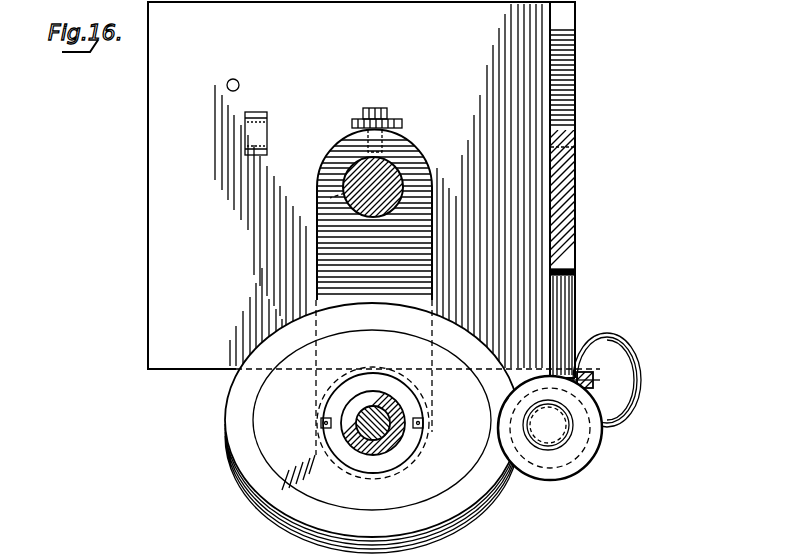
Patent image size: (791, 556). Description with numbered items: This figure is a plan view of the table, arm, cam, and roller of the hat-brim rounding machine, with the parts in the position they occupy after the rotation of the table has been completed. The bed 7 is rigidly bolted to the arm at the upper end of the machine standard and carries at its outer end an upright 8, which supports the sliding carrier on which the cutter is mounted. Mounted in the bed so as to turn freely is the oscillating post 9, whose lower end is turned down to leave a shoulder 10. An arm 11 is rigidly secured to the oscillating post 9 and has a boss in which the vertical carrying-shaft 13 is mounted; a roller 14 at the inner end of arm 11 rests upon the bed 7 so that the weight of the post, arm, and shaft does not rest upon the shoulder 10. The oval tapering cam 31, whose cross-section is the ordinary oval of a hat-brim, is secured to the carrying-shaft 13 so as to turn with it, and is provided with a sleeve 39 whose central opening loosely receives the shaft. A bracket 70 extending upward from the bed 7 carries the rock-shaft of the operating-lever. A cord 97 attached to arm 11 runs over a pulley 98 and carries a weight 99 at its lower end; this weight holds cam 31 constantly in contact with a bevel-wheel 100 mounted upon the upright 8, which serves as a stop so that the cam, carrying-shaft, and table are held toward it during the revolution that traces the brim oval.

The bed 7 is at (361, 190).
The upright 8 is at (565, 174).
The oscillating post 9 is at (393, 178).
The shoulder 10 is at (330, 198).
The arm 11 is at (374, 215).
The carrying-shaft 13 is at (360, 455).
The roller 14 is at (358, 124).
The oval tapering cam 31 is at (494, 487).
The sleeve 39 is at (392, 452).
The bracket 70 is at (245, 130).
The cord 97 is at (598, 380).
The pulley 98 is at (587, 372).
The weight 99 is at (620, 387).
The bevel-wheel 100 is at (581, 450).